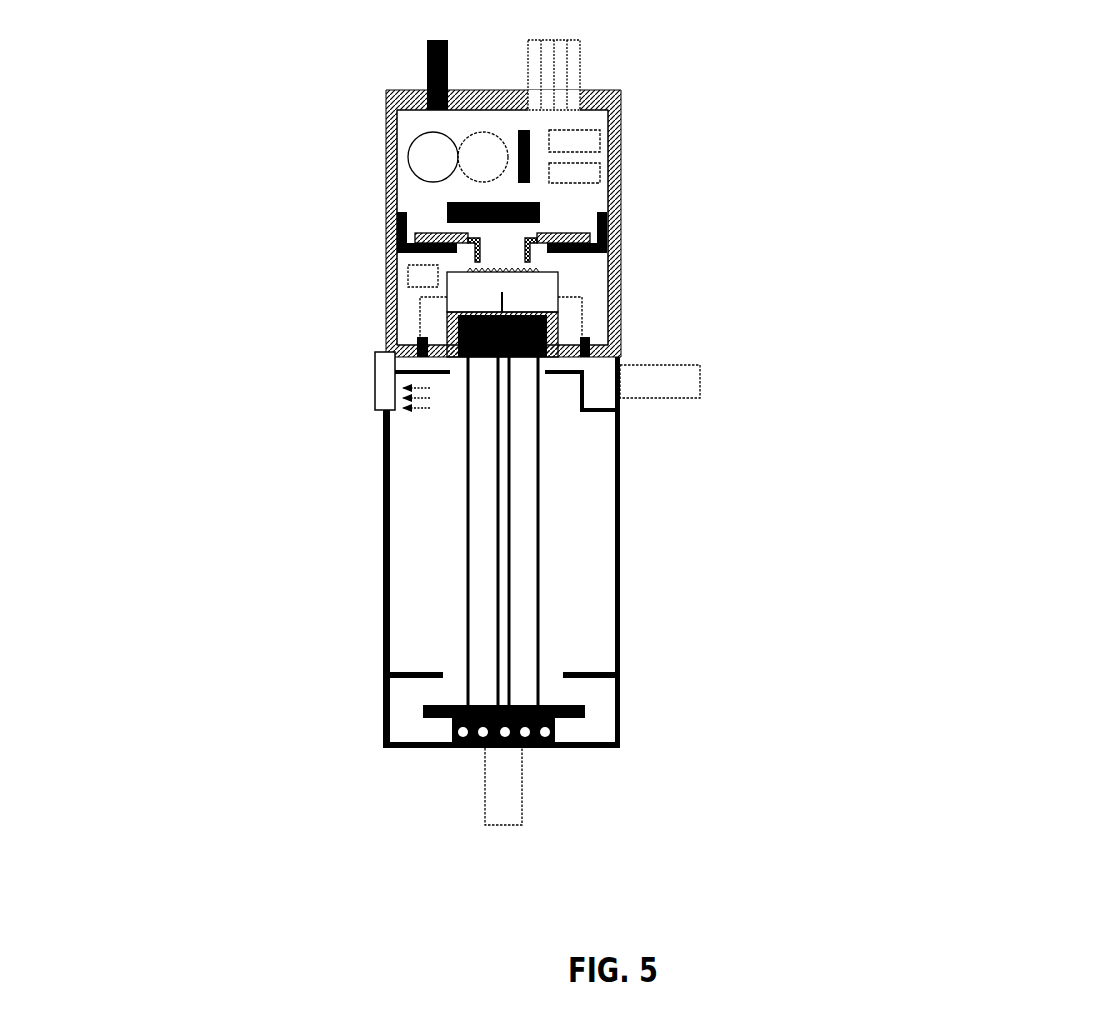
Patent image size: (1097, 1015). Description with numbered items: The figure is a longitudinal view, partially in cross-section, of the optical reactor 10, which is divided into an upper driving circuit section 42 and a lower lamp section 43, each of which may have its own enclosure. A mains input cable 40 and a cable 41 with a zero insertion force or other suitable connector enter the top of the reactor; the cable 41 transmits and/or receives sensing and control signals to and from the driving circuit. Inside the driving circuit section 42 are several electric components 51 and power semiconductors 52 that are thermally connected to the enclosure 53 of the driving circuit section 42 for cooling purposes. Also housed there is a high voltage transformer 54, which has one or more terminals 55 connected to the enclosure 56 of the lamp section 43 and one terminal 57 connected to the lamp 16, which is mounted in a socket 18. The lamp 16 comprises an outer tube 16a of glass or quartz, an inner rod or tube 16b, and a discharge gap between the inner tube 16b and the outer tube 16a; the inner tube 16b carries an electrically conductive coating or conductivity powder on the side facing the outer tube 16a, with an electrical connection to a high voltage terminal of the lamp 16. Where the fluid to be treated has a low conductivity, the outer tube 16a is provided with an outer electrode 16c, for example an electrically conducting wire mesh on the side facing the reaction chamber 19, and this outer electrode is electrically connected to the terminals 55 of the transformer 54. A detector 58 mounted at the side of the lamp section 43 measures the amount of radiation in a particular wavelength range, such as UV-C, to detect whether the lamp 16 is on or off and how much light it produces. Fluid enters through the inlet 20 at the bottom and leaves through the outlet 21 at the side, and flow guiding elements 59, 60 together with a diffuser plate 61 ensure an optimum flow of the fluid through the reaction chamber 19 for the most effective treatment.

The reactor 10 is at (353, 727).
The lamp 16 is at (438, 492).
The outer tube 16a is at (540, 593).
The inner tube 16b is at (510, 537).
The outer electrode 16c is at (540, 623).
The socket 18 is at (505, 357).
The reaction chamber 19 is at (595, 499).
The inlet 20 is at (502, 783).
The outlet 21 is at (688, 387).
The mains input cable 40 is at (428, 81).
The cable 41 is at (580, 50).
The driving circuit section 42 is at (368, 255).
The lamp section 43 is at (368, 575).
The electric components 51 is at (597, 140).
The power semiconductors 52 is at (595, 236).
The enclosure 53 is at (620, 280).
The high voltage transformer 54 is at (550, 285).
The terminals 55 is at (420, 345).
The enclosure 56 is at (385, 633).
The terminal 57 is at (503, 313).
The detector 58 is at (373, 403).
The flow guiding element 59 is at (603, 410).
The flow guiding element 60 is at (595, 670).
The diffuser plate 61 is at (557, 727).